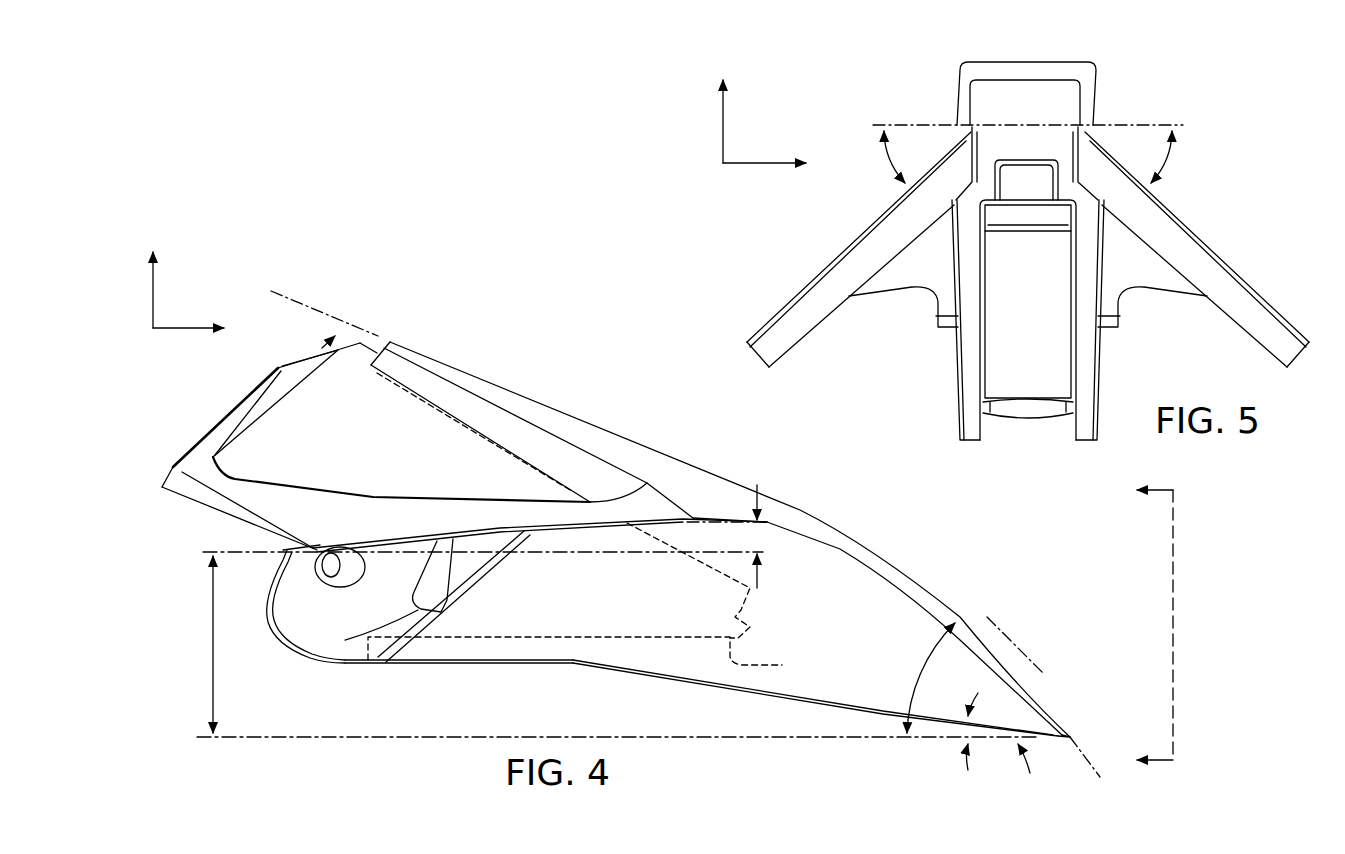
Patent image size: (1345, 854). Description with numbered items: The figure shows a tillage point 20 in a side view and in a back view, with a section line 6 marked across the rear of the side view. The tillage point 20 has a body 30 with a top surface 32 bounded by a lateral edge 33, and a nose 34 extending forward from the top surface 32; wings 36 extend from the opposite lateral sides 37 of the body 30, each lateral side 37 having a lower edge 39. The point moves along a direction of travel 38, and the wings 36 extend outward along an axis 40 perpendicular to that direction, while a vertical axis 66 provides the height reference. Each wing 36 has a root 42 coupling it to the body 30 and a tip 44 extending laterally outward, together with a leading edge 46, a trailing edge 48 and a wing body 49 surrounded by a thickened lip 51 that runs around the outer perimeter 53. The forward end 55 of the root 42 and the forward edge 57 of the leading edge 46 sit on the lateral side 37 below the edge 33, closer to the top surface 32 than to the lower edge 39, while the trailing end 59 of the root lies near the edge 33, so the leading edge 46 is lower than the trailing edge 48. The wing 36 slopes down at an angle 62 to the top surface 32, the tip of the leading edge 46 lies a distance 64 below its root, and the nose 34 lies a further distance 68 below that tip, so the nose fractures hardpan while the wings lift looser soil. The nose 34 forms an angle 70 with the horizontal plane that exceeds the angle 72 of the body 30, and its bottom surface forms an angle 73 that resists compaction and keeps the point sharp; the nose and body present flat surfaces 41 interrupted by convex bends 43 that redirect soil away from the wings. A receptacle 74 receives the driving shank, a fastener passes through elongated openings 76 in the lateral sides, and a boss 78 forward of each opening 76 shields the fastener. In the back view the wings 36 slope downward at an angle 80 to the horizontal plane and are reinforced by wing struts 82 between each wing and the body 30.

In FIG. 4, the section line 6- 6 is at (1142, 626).
In FIG. 4, the tillage point 20 is at (478, 336).
In FIG. 5, the tillage point 20 is at (1161, 90).
In FIG. 4, the body 30 is at (853, 586).
In FIG. 5, the body 30 is at (1003, 121).
In FIG. 4, the top surface 32 is at (715, 472).
In FIG. 4, the lateral edge 33 is at (893, 582).
In FIG. 4, the nose 34 is at (1058, 718).
In FIG. 4, the wing 36 is at (267, 430).
In FIG. 5, the wing 36 is at (796, 291).
In FIG. 4, the lateral side 37 is at (590, 622).
In FIG. 4, the direction of travel 38 is at (185, 330).
In FIG. 4, the lower edge 39 is at (472, 663).
In FIG. 5, the axis 40 is at (760, 165).
In FIG. 4, the flat surface 41 is at (640, 440).
In FIG. 4, the wing root 42 is at (513, 430).
In FIG. 5, the wing root 42 is at (956, 135).
In FIG. 4, the convex bend 43 is at (840, 512).
In FIG. 4, the wing tip 44 is at (207, 500).
In FIG. 5, the wing tip 44 is at (756, 346).
In FIG. 4, the leading edge 46 is at (552, 531).
In FIG. 4, the trailing edge 48 is at (200, 443).
In FIG. 4, the wing body 49 is at (397, 427).
In FIG. 4, the lip 51 is at (272, 382).
In FIG. 4, the outer perimeter 53 is at (225, 514).
In FIG. 4, the forward end 55 is at (613, 487).
In FIG. 4, the forward edge 57 is at (665, 507).
In FIG. 4, the trailing end 59 is at (373, 370).
In FIG. 4, the angle 62 is at (346, 314).
In FIG. 4, the distance 64 is at (762, 517).
In FIG. 4, the vertical axis 66 is at (152, 285).
In FIG. 5, the vertical axis 66 is at (723, 125).
In FIG. 4, the distance 68 is at (210, 627).
In FIG. 4, the angle 70 is at (1047, 689).
In FIG. 4, the angle 72 is at (920, 668).
In FIG. 4, the angle 73 is at (967, 737).
In FIG. 4, the receptacle 74 is at (591, 601).
In FIG. 5, the receptacle 74 is at (1071, 355).
In FIG. 4, the elongated opening 76 is at (317, 570).
In FIG. 4, the boss 78 is at (348, 640).
In FIG. 5, the angle 80 is at (944, 136).
In FIG. 5, the wing strut 82 is at (918, 288).